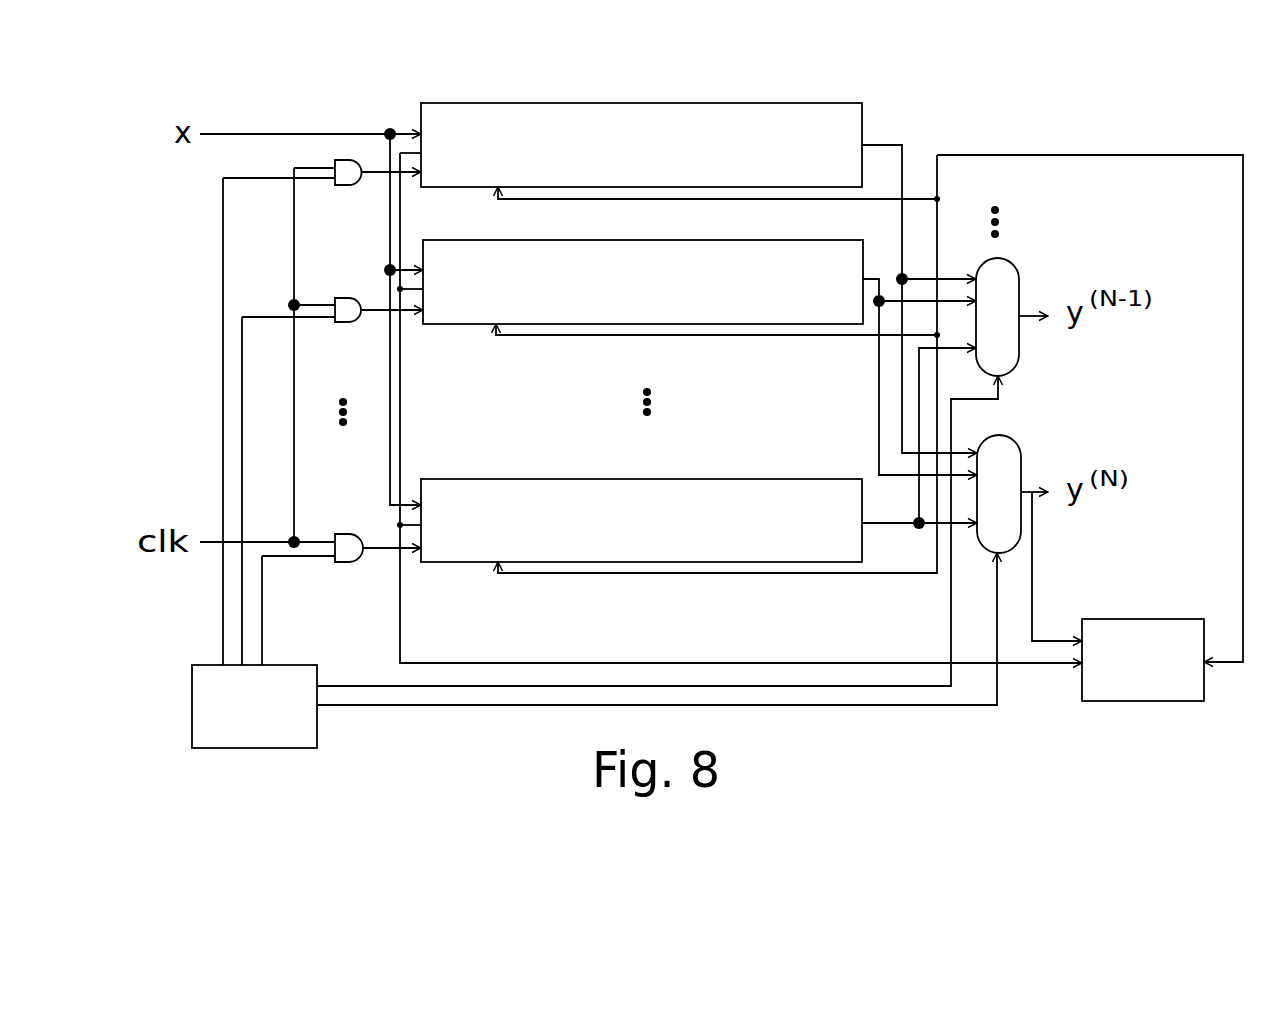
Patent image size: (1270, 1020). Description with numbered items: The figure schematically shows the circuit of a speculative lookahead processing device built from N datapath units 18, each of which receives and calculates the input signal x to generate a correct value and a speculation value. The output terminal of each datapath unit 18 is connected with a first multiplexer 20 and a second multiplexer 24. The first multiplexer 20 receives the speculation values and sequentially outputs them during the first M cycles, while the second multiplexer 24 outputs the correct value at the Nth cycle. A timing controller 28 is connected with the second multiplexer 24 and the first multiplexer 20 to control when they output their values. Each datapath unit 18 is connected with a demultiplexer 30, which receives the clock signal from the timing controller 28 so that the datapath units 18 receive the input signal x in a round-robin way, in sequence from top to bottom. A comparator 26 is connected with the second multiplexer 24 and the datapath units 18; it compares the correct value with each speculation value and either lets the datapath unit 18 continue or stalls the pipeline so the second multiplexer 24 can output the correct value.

The datapath unit 18 is at (803, 103).
The first multiplexer 20 is at (1019, 275).
The second multiplexer 24 is at (1021, 452).
The comparator 26 is at (1132, 701).
The timing controller 28 is at (247, 748).
The demultiplexer 30 is at (345, 185).